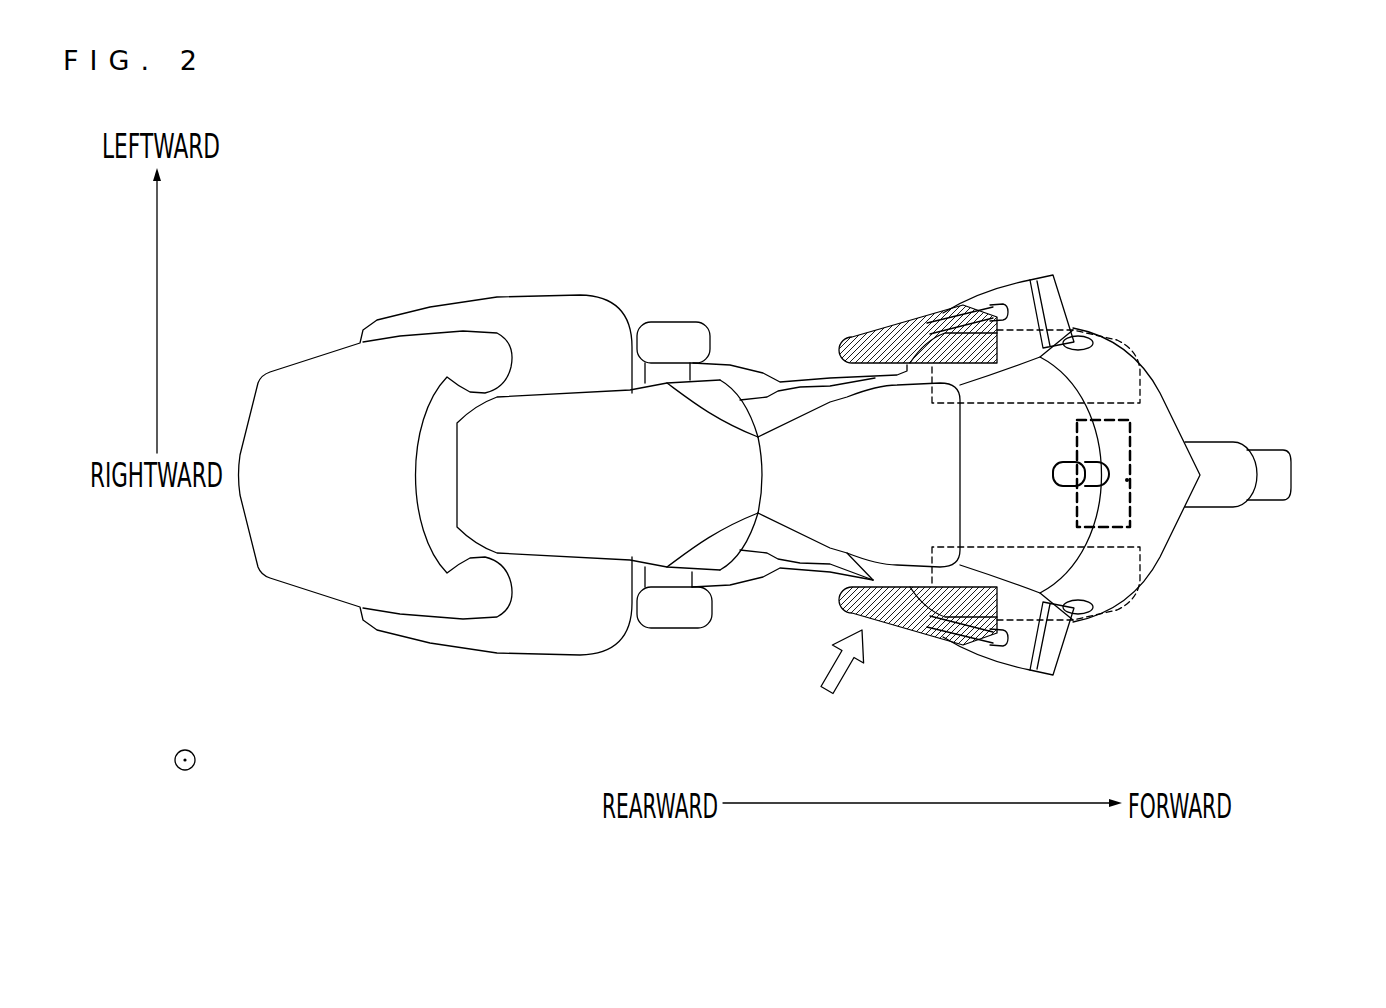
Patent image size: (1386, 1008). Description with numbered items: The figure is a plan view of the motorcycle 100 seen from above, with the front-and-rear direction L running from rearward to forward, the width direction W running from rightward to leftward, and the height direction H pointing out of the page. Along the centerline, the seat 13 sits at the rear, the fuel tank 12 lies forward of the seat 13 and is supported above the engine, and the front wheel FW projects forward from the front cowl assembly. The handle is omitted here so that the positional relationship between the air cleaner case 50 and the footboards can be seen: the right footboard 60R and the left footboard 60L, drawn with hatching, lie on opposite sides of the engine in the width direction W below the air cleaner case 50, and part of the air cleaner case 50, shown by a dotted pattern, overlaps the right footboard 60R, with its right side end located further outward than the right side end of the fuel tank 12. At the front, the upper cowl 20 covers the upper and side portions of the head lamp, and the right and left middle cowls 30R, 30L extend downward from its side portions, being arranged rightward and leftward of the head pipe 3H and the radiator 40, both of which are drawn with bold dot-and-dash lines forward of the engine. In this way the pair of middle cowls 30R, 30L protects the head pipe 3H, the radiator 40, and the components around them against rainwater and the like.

The motorcycle 100 is at (354, 208).
The fuel tank 12 is at (833, 427).
The seat 13 is at (600, 410).
The upper cowl 20 is at (1177, 483).
The left middle cowl 30L is at (1117, 365).
The right middle cowl 30R is at (1137, 582).
The radiator 40 is at (1130, 440).
The head pipe 3H is at (1108, 482).
The air cleaner case 50 is at (852, 605).
The left footboard 60L is at (908, 327).
The right footboard 60R is at (907, 630).
The front wheel FW is at (1273, 467).
The width direction W is at (157, 340).
The front-and-rear direction L is at (935, 805).
The height direction H is at (175, 762).